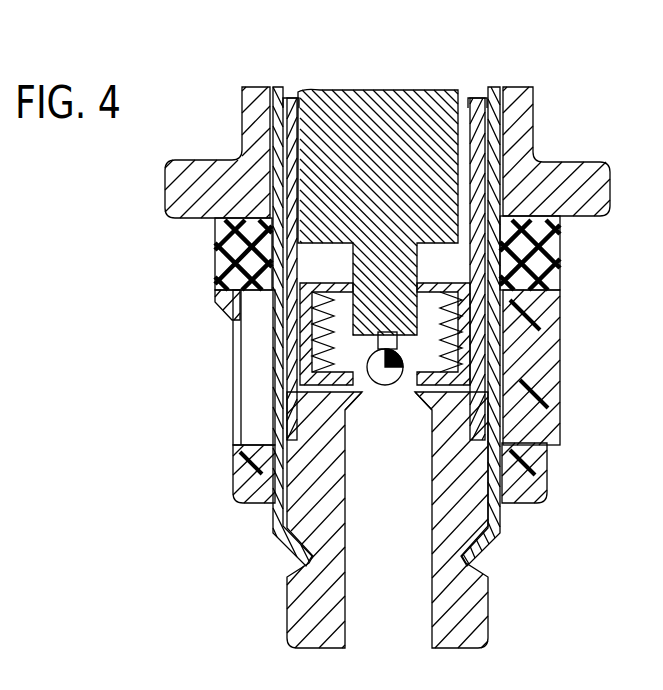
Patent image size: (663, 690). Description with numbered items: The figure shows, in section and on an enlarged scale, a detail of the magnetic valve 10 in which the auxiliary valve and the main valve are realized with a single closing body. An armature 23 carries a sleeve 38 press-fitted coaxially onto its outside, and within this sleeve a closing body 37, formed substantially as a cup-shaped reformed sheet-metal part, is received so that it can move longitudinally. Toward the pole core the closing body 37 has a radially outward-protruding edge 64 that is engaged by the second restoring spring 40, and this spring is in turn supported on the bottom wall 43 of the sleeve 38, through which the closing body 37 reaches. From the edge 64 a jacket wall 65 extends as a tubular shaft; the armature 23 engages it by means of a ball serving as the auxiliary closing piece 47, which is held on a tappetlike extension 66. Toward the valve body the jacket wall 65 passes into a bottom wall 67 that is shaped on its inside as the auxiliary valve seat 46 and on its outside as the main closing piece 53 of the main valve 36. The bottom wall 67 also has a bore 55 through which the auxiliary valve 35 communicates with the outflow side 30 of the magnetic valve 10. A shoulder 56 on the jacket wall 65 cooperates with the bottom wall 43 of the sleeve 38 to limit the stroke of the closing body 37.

The magnetic valve 10 is at (302, 76).
The armature 23 is at (402, 100).
The sleeve 38 is at (478, 148).
The second restoring spring 40 is at (243, 303).
The edge 64 is at (218, 275).
The tappetlike extension 66 is at (415, 275).
The auxiliary valve seat 46 is at (465, 392).
The main valve 36 is at (282, 524).
The bore 55 is at (405, 398).
The shoulder 56 is at (342, 372).
The jacket wall 65 is at (440, 322).
The closing body 37 is at (322, 342).
The auxiliary closing piece 47 is at (435, 352).
The auxiliary valve 35 is at (372, 378).
The bottom wall of the sleeve 43 is at (345, 386).
The outflow side 30 is at (428, 612).
The main closing piece 53 is at (360, 425).
The bottom wall 67 is at (470, 432).